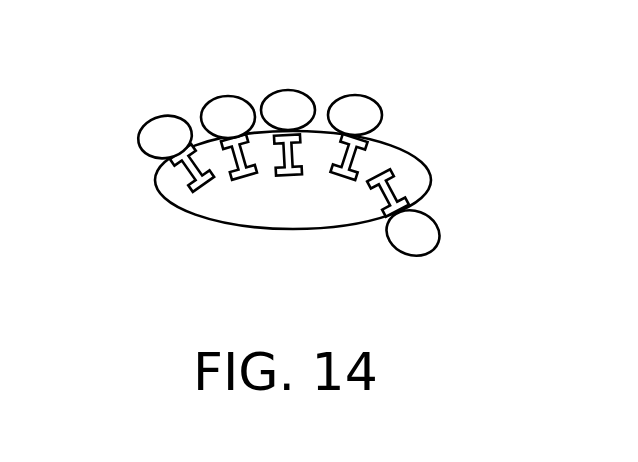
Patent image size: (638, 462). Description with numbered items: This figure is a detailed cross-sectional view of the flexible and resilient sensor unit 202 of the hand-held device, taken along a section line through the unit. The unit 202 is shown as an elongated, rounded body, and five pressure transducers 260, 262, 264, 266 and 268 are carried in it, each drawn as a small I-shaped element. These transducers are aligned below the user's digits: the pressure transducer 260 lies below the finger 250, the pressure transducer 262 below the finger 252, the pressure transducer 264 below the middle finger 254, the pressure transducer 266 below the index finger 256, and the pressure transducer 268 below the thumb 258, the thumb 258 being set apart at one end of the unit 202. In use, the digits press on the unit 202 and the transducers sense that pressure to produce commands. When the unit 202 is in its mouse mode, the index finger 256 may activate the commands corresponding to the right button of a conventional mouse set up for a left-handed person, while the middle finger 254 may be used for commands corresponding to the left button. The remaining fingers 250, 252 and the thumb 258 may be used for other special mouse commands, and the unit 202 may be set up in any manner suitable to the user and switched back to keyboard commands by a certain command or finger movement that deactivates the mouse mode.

The flexible and resilient sensor unit 202 is at (388, 157).
The finger 250 is at (160, 127).
The finger 252 is at (225, 107).
The middle finger 254 is at (287, 102).
The index finger 256 is at (353, 112).
The thumb 258 is at (423, 233).
The pressure transducer 260 is at (188, 183).
The pressure transducer 262 is at (233, 176).
The pressure transducer 264 is at (282, 174).
The pressure transducer 266 is at (335, 176).
The pressure transducer 268 is at (400, 198).